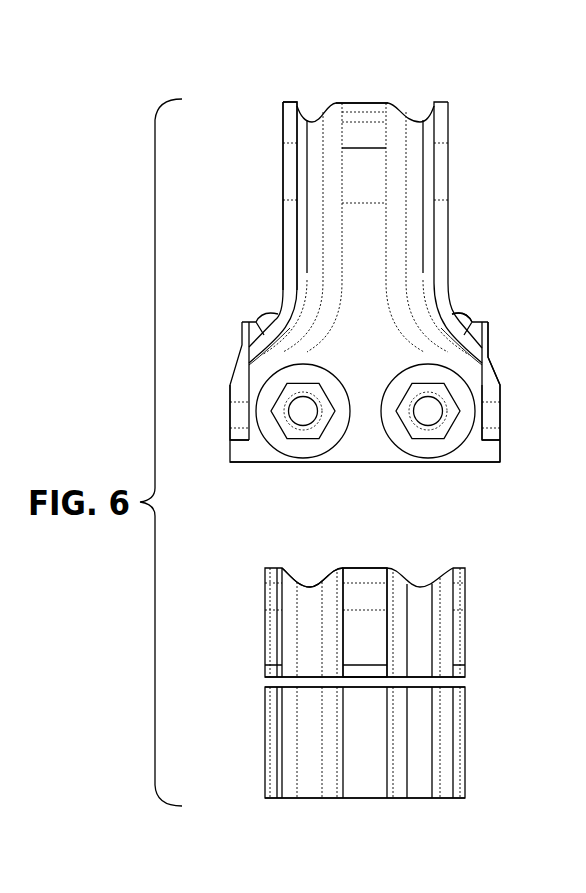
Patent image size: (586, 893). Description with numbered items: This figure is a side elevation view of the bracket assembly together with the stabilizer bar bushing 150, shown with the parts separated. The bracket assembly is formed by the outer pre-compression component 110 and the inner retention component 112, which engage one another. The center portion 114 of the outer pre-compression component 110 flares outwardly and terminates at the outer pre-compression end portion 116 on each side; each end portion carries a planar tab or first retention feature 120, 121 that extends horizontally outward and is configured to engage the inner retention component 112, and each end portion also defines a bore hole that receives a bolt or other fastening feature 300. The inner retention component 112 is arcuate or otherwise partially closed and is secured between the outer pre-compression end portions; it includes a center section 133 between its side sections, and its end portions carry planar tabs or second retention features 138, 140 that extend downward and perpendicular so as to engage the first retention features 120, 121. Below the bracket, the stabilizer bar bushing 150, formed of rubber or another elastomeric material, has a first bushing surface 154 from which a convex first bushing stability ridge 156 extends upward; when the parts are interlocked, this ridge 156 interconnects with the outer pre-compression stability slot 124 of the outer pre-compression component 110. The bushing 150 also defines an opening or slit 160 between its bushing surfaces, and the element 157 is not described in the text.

The outer pre-compression component 110 is at (458, 195).
The inner retention component 112 is at (503, 378).
The center portion 114 is at (280, 100).
The outer pre-compression end portion 116 is at (362, 457).
The first retention feature 120 is at (240, 458).
The first retention feature 121 is at (488, 460).
The outer pre-compression stability slot 124 is at (364, 110).
The center section 133 is at (462, 315).
The second retention feature 138 is at (232, 420).
The second retention feature 140 is at (492, 420).
The stabilizer bar bushing 150 is at (512, 630).
The first bushing surface 154 is at (327, 577).
The first bushing stability ridge 156 is at (368, 577).
The lower clamp 157 is at (442, 798).
The slit 160 is at (263, 681).
The fastening feature 300 is at (437, 447).